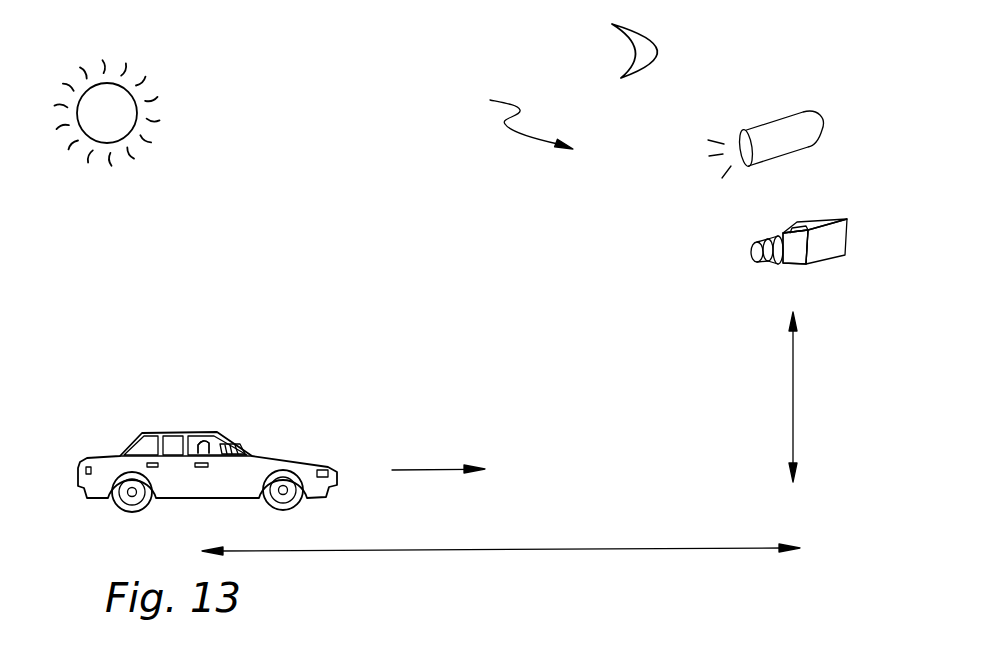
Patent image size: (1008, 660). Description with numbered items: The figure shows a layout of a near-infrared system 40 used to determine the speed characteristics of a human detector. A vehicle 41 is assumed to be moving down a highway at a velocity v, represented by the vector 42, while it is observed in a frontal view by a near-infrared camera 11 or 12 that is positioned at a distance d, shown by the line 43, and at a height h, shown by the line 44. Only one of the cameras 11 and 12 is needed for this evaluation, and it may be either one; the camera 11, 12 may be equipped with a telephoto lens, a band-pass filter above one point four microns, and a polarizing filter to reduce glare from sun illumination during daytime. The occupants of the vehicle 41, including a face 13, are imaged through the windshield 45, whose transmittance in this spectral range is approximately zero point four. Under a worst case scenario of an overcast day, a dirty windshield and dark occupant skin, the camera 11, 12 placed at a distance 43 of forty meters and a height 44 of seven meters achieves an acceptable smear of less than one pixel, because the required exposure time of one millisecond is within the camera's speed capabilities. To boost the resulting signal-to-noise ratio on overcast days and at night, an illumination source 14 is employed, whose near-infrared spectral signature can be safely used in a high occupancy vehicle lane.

The camera 11 is at (785, 228).
The camera 12 is at (840, 211).
The face 13 is at (217, 432).
The near-infrared illuminator 14 is at (770, 122).
The near-infrared system 40 is at (518, 115).
The vehicle 41 is at (285, 455).
The vector 42 is at (424, 470).
The line 43 is at (617, 548).
The line 44 is at (795, 362).
The windshield 45 is at (233, 447).